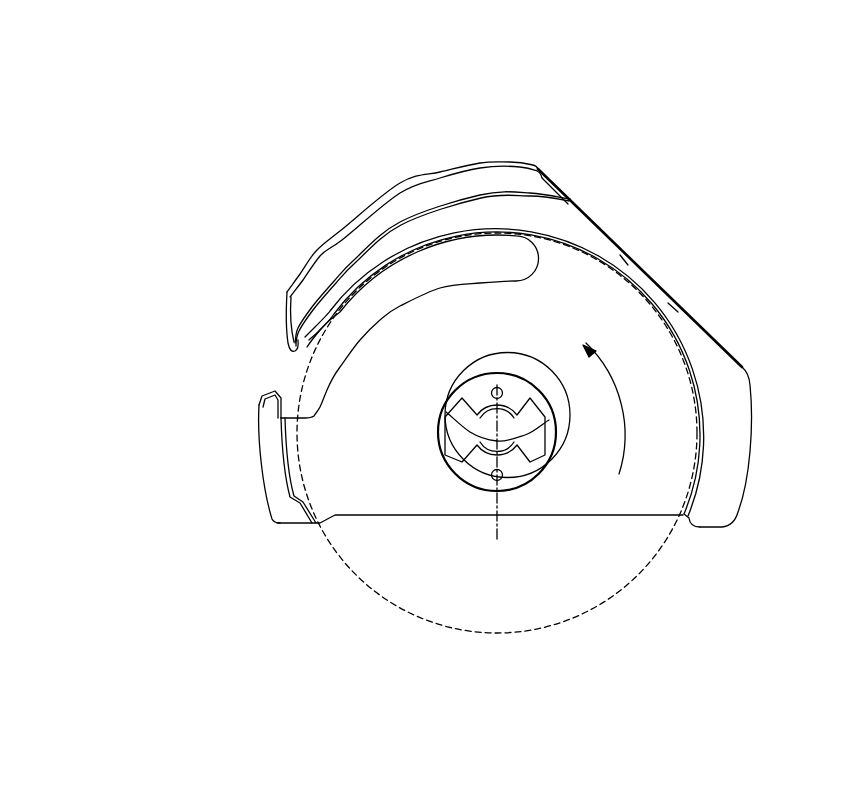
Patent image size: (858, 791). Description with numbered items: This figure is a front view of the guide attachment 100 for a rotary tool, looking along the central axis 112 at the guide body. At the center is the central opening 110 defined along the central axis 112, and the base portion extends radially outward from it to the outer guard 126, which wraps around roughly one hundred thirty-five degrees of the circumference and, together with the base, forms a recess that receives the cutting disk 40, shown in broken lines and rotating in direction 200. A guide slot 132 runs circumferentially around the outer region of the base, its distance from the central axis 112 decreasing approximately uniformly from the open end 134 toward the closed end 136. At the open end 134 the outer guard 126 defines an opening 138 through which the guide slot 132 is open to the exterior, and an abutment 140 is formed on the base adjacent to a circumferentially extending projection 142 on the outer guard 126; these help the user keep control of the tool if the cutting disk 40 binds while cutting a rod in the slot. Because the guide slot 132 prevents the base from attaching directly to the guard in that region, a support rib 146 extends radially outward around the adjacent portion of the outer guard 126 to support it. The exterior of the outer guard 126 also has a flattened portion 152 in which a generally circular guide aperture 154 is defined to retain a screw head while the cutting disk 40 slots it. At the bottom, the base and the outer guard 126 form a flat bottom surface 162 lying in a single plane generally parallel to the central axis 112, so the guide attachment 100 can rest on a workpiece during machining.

The guide attachment 100 is at (311, 118).
The guide slot 132 is at (386, 298).
The support rib 146 is at (517, 180).
The open end 134 is at (303, 367).
The closed end 136 is at (512, 262).
The opening 138 is at (278, 362).
The abutment 140 is at (290, 398).
The circumferentially extending projection 142 is at (258, 406).
The flattened portion 152 is at (708, 318).
The guide aperture 154 is at (677, 258).
The outer guard 126 is at (735, 470).
The flat bottom surface 162 is at (703, 531).
The cutting disk 40 is at (358, 583).
The direction 200 is at (623, 397).
The central opening 110 is at (485, 434).
The central axis 112 is at (498, 523).